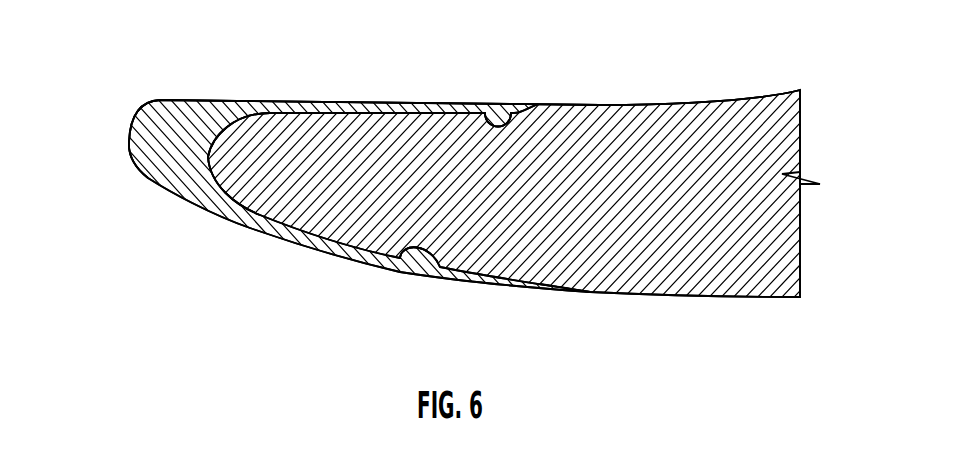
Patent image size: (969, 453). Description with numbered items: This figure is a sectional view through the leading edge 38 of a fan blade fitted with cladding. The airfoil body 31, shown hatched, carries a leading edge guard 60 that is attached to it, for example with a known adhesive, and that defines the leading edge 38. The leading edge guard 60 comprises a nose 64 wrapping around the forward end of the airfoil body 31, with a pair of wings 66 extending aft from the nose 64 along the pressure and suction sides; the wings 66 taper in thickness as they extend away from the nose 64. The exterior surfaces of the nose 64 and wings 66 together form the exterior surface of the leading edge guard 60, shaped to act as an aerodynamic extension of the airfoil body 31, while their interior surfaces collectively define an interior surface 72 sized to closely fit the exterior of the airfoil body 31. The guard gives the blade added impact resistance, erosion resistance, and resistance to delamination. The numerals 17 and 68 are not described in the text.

The airfoil substrate 17 is at (708, 213).
The airfoil body 31 is at (559, 188).
The leading edge 38 is at (148, 138).
The leading edge guard 60 is at (178, 228).
The nose 64 is at (168, 100).
The wings 66 is at (383, 113).
The coating terminal end 68 is at (589, 293).
The interior surface 72 is at (500, 119).